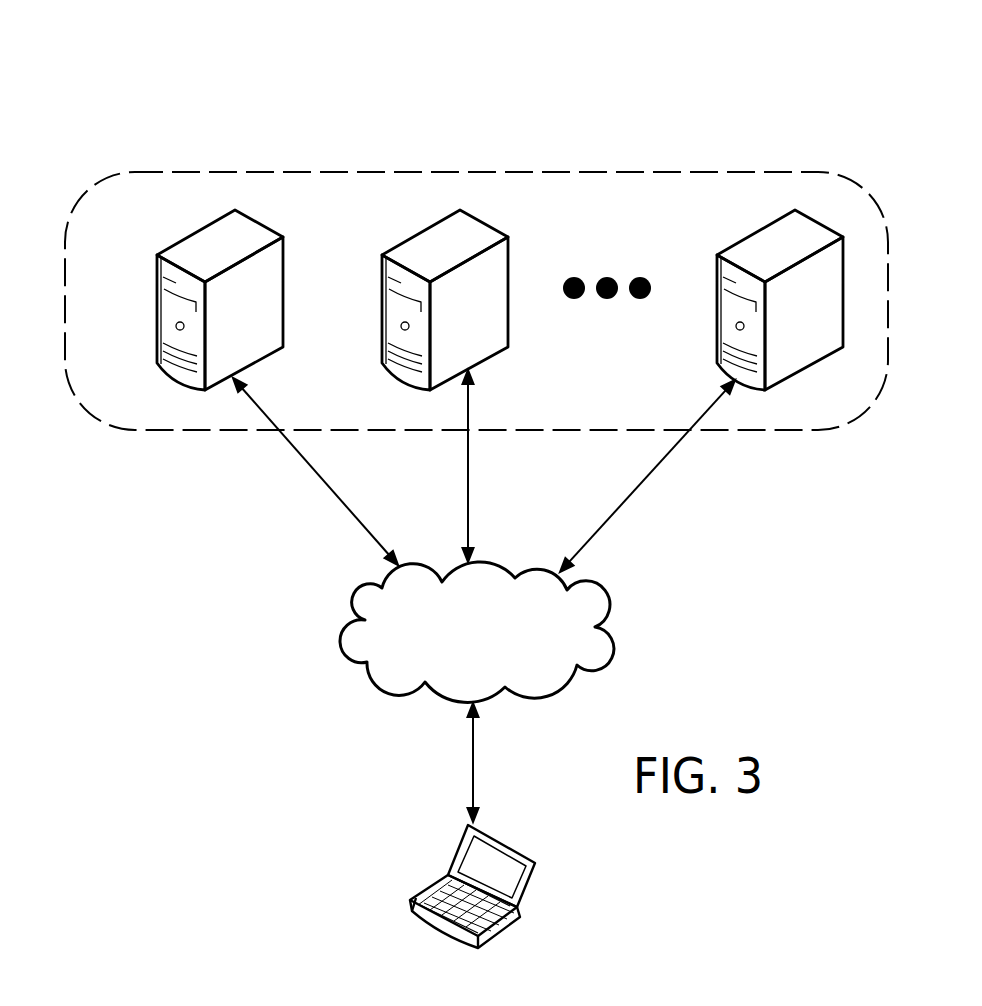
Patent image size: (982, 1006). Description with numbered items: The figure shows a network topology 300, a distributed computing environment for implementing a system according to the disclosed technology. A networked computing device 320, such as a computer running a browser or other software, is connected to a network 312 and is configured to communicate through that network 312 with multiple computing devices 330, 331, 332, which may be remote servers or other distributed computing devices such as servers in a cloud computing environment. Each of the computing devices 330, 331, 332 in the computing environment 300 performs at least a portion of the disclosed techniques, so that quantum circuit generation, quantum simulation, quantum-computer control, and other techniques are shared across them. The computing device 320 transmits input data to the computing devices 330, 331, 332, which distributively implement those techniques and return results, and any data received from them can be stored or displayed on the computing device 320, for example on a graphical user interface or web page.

The network topology 300 is at (146, 41).
The computing device 330 is at (213, 215).
The computing device 331 is at (436, 215).
The computing device 332 is at (775, 210).
The network 312 is at (477, 632).
The networked computing device 320 is at (412, 910).